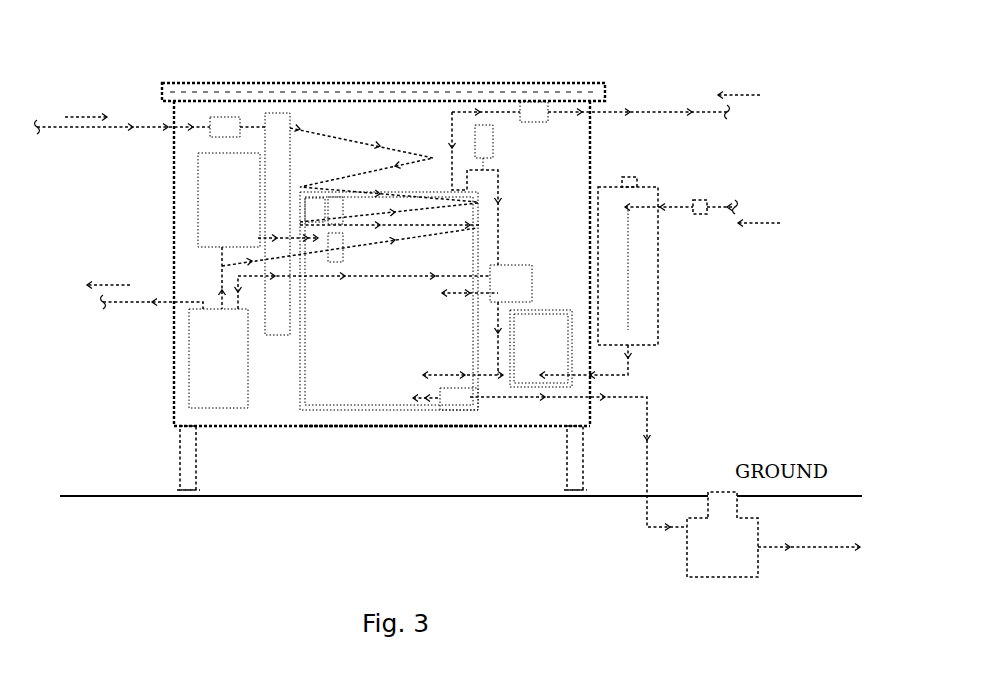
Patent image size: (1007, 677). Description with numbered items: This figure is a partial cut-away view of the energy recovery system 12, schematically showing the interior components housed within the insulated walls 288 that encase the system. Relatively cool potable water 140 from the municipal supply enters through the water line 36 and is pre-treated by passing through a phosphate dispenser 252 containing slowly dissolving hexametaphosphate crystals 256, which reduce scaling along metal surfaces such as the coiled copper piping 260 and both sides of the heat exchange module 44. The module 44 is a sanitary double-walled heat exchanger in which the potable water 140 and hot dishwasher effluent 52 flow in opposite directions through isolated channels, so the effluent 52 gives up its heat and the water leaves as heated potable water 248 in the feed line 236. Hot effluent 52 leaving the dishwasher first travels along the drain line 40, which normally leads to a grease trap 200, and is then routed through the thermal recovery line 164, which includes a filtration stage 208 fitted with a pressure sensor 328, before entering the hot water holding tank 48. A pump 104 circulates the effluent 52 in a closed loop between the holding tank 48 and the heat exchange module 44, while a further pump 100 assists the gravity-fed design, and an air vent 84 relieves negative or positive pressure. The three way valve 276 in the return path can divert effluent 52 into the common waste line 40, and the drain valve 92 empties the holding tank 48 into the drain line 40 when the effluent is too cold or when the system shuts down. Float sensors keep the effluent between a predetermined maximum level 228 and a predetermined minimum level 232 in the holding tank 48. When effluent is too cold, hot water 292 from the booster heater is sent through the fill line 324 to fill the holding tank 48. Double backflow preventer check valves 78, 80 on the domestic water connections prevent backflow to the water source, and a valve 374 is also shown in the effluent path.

The energy recovery system 12 is at (367, 246).
The water line 36 is at (108, 130).
The drain line 40 is at (648, 448).
The heat exchange module 44 is at (217, 358).
The hot water holding tank 48 is at (353, 365).
The effluent 52 is at (759, 209).
The double backflow preventer check valve 78 is at (532, 108).
The double backflow preventer check valve 80 is at (222, 128).
The air vent 84 is at (484, 140).
The drain valve 92 is at (459, 432).
The pump 100 is at (523, 340).
The pump 104 is at (236, 226).
The potable water 140 is at (86, 105).
The thermal recovery line 164 is at (668, 208).
The grease trap 200 is at (773, 555).
The filtration stage 208 is at (648, 268).
The predetermined maximum level 228 is at (368, 235).
The predetermined minimum level 232 is at (368, 269).
The feed line 236 is at (163, 303).
The heated potable water 248 is at (109, 273).
The phosphate dispenser 252 is at (317, 183).
The hexametaphosphate crystals 256 is at (278, 127).
The coiled copper piping 260 is at (345, 135).
The three way valve 276 is at (507, 275).
The insulated walls 288 is at (390, 451).
The hot water 292 is at (739, 84).
The fill line 324 is at (636, 112).
The pressure sensor 328 is at (638, 178).
The valve 374 is at (702, 215).